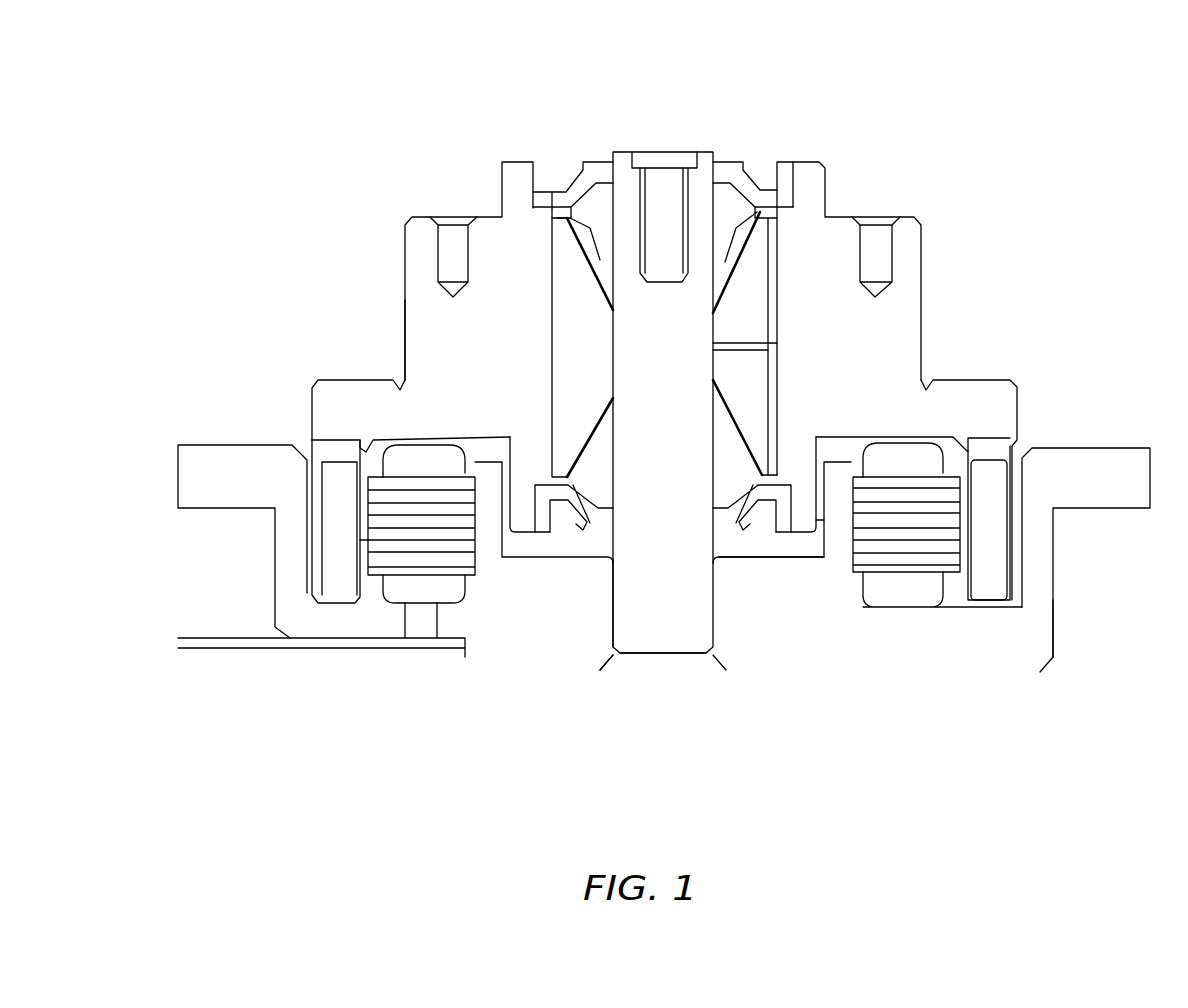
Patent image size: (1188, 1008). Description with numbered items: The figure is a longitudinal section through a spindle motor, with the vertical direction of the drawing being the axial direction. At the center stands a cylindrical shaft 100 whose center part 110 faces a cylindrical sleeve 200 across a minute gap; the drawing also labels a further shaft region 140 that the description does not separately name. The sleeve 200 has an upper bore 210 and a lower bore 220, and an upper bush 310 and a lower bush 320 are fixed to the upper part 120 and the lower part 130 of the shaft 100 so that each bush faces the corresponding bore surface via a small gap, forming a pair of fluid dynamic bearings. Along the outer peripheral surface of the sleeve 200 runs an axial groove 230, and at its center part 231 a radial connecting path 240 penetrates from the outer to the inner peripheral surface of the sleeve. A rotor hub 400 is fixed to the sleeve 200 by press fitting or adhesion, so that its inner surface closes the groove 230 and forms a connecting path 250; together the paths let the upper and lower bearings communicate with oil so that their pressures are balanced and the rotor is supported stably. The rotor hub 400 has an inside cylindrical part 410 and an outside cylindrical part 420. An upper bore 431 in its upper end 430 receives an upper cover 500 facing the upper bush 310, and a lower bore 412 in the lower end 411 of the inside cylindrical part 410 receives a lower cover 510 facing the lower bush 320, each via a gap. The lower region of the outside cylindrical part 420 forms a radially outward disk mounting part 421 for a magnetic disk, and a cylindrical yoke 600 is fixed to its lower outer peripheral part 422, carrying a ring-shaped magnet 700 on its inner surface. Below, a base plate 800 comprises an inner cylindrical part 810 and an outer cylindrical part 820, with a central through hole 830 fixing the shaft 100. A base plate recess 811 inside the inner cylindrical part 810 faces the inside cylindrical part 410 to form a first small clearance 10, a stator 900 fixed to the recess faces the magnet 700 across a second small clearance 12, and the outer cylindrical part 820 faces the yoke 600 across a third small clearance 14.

The shaft 100 is at (708, 143).
The center part 110 is at (433, 237).
The upper part 120 is at (631, 245).
The lower part 130 is at (635, 458).
The shaft body 140 is at (683, 610).
The sleeve 200 is at (548, 280).
The upper bore 210 is at (580, 258).
The lower bore 220 is at (745, 432).
The groove 230 is at (774, 240).
The center part 231 is at (777, 345).
The radial connecting path 240 is at (740, 350).
The connecting path 250 is at (778, 261).
The upper bush 310 is at (598, 228).
The lower bush 320 is at (737, 477).
The rotor hub 400 is at (390, 287).
The inside cylindrical part 410 is at (800, 473).
The lower end 411 is at (807, 513).
The lower bore 412 is at (533, 533).
The outside cylindrical part 420 is at (440, 367).
The disk mounting part 421 is at (355, 410).
The lower outer peripheral part 422 is at (323, 430).
The upper end 430 is at (818, 168).
The upper bore 431 is at (796, 185).
The upper cover 500 is at (595, 157).
The lower cover 510 is at (582, 530).
The yoke 600 is at (317, 587).
The magnet 700 is at (340, 583).
The base plate 800 is at (1004, 675).
The inner cylindrical part 810 is at (465, 640).
The base plate recess 811 is at (772, 583).
The outer cylindrical part 820 is at (1040, 583).
The through hole 830 is at (613, 613).
The stator 900 is at (897, 533).
The first small clearance 10 is at (820, 513).
The second small clearance 12 is at (362, 553).
The third small clearance 14 is at (1020, 531).